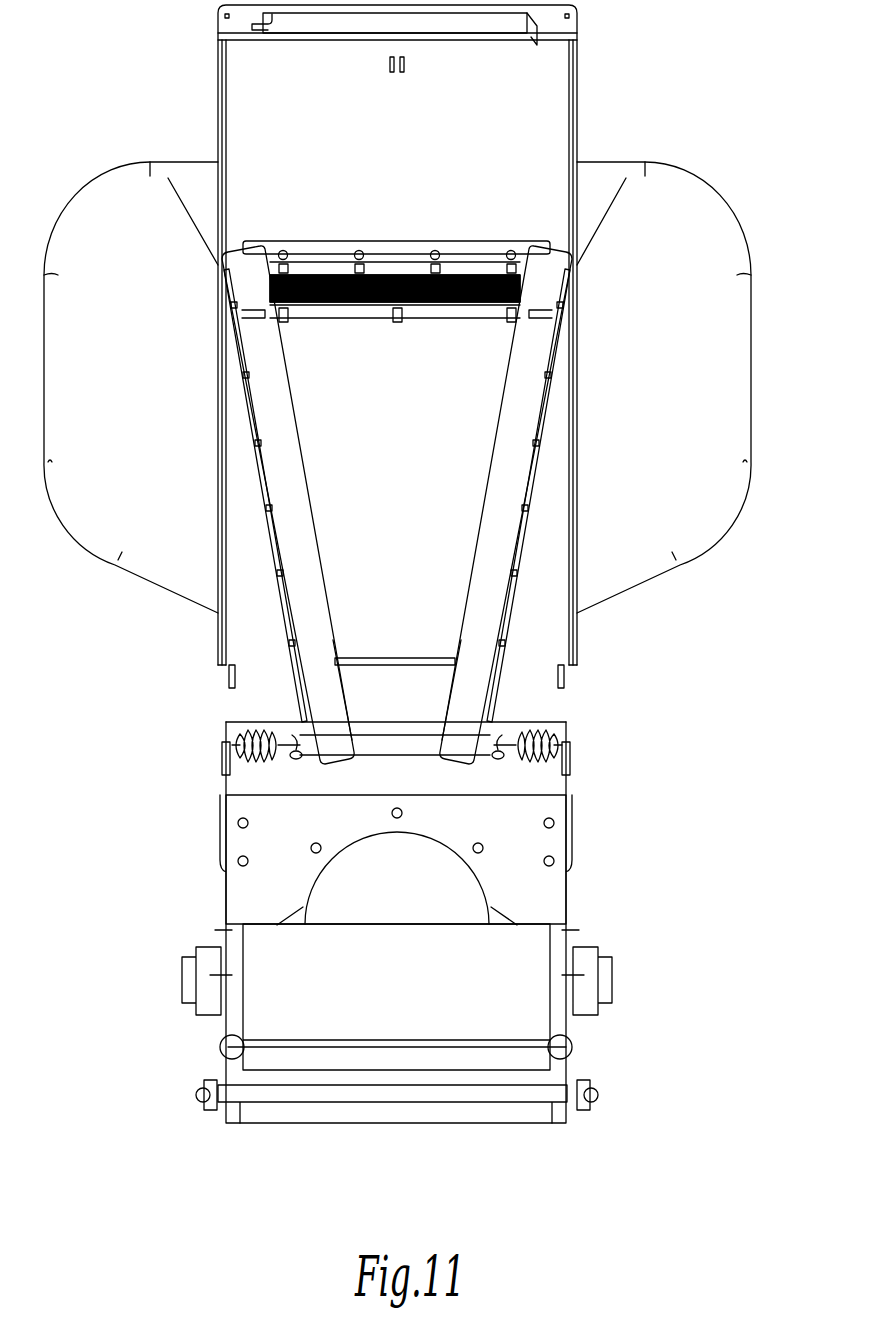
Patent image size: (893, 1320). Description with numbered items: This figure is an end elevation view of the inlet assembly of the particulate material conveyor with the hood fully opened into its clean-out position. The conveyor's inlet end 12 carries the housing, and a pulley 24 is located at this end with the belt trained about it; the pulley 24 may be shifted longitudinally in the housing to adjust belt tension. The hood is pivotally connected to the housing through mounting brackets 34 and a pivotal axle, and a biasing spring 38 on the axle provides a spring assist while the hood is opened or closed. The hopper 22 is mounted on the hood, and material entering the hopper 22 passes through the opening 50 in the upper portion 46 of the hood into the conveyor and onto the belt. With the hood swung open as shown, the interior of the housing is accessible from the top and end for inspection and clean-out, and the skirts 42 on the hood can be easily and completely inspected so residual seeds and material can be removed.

The inlet end 12 is at (568, 888).
The hopper 22 is at (695, 540).
The pulley 24 is at (290, 958).
The mounting bracket 34 is at (222, 758).
The biasing spring 38 is at (245, 758).
The skirt 42 is at (280, 412).
The upper portion 46 is at (550, 622).
The opening 50 is at (302, 360).